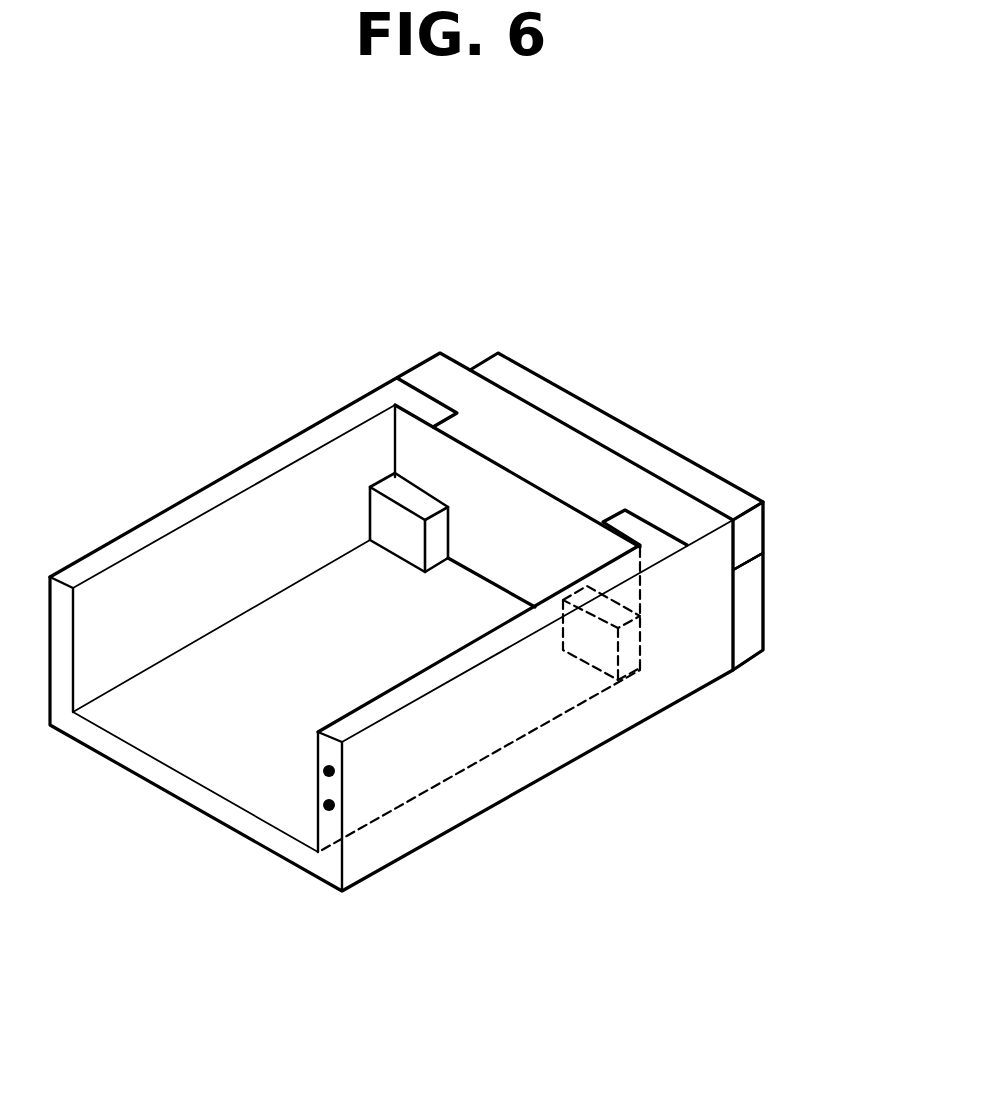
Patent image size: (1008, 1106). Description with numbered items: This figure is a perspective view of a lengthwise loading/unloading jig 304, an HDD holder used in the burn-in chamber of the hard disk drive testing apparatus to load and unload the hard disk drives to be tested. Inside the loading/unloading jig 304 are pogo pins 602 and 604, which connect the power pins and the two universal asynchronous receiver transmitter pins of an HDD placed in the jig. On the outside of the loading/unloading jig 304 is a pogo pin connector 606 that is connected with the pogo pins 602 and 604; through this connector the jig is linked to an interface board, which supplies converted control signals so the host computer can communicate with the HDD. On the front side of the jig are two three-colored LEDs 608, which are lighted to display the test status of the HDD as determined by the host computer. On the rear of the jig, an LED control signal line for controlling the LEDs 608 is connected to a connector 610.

The loading/unloading jig 304 is at (187, 373).
The pogo pin 602 is at (390, 487).
The pogo pin 604 is at (598, 662).
The pogo pin connector 606 is at (748, 538).
The LEDs 608 is at (323, 772).
The connector 610 is at (748, 603).